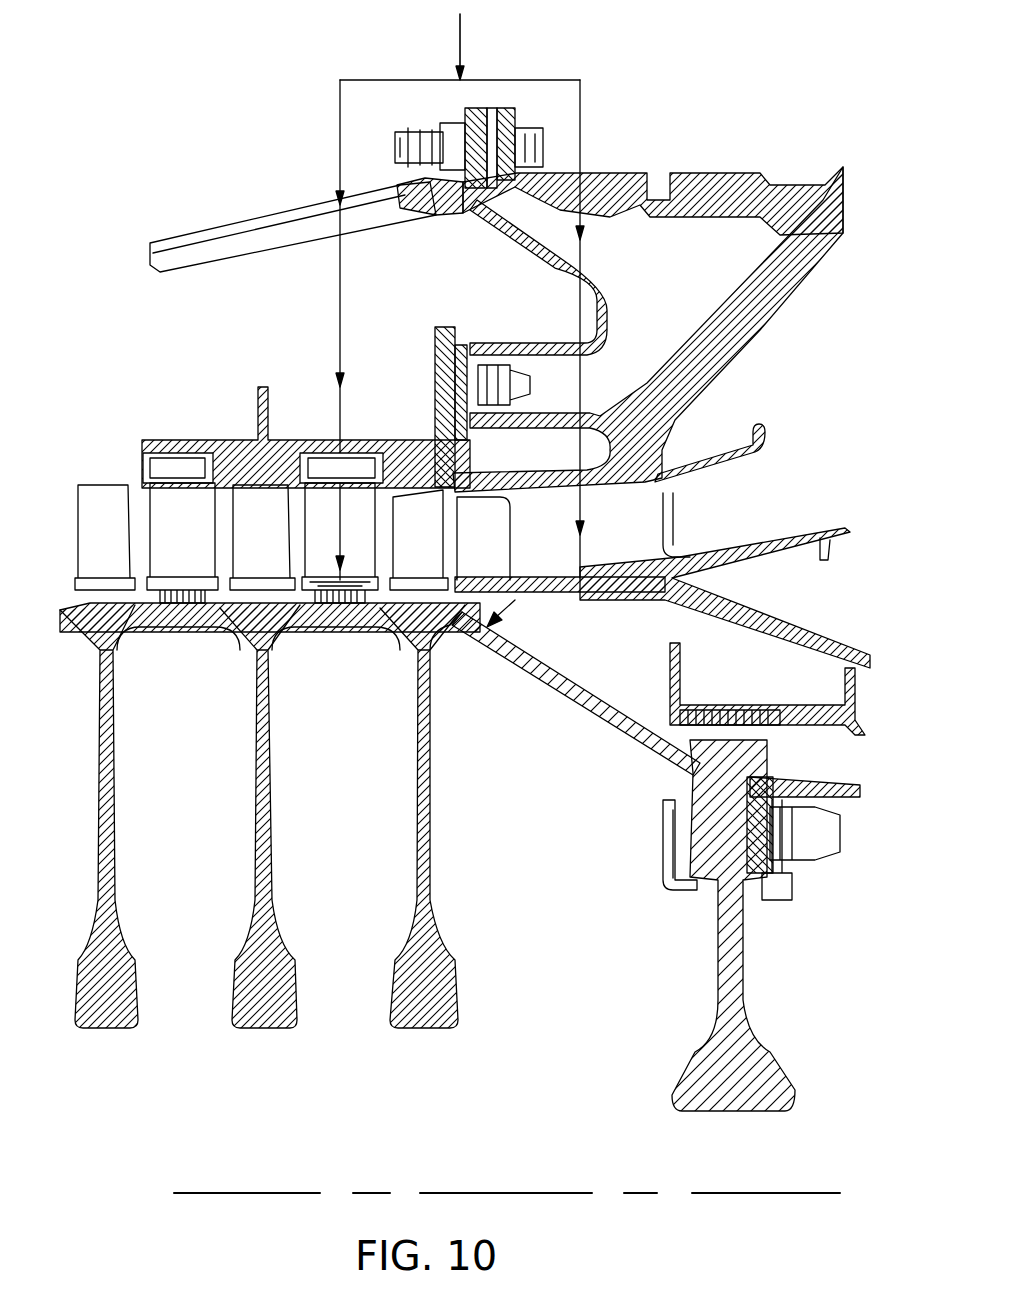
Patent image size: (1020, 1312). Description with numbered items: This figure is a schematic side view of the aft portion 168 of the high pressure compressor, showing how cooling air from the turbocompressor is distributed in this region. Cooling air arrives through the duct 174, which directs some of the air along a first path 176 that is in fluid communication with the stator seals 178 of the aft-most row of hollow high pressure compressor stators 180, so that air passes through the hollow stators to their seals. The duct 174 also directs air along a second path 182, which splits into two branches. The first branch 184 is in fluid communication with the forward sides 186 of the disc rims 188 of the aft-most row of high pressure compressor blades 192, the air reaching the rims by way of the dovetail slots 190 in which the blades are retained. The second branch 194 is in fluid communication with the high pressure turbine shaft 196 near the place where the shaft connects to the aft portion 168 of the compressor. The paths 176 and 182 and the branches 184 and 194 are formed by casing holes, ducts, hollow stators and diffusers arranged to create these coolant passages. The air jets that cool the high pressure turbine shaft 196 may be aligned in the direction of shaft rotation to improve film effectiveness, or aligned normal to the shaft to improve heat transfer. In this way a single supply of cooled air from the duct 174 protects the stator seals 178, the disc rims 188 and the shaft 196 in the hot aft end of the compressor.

The aft portion of the high pressure compressor 168 is at (290, 158).
The duct 174 is at (470, 30).
The first path 176 is at (410, 78).
The stator seals 178 is at (335, 578).
The high pressure compressor hollow stators 180 is at (325, 505).
The second path 182 is at (558, 78).
The first branch 184 is at (457, 583).
The forward sides of the disc rims 186 is at (237, 663).
The disc rims 188 is at (117, 637).
The dovetail slots 190 is at (285, 635).
The high pressure compressor blades 192 is at (420, 523).
The second branch 194 is at (505, 612).
The high pressure turbine shaft 196 is at (493, 650).